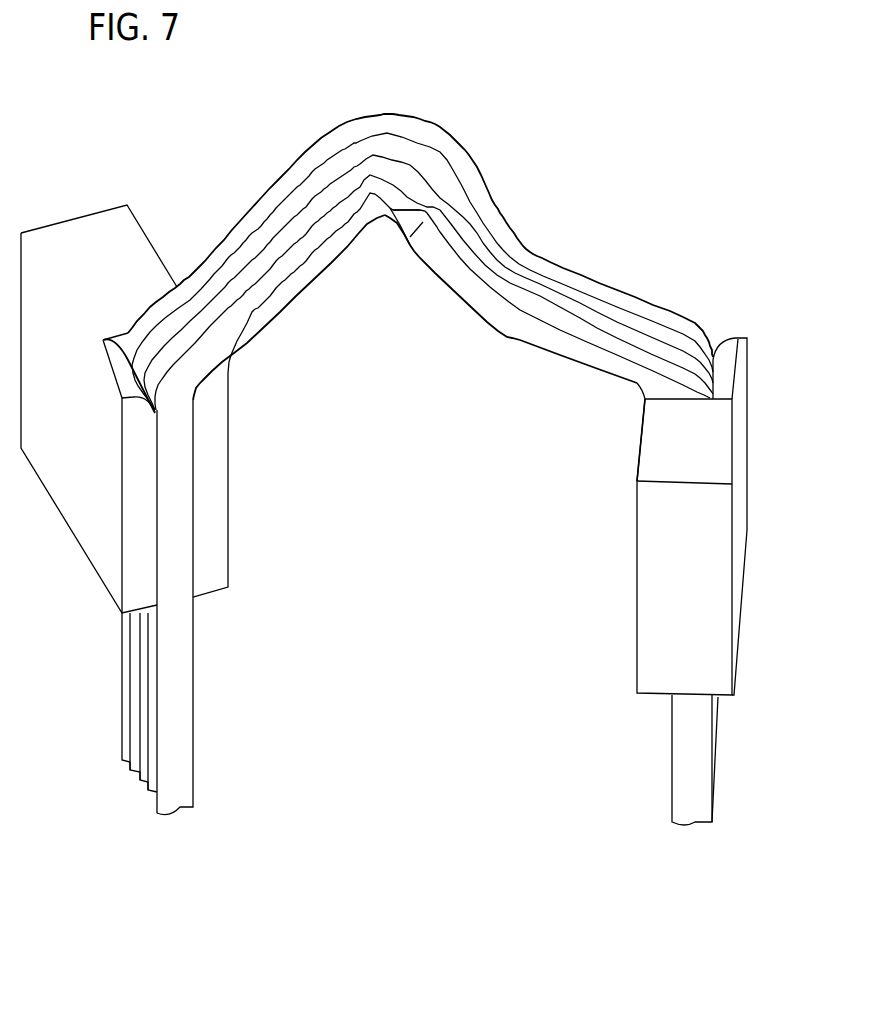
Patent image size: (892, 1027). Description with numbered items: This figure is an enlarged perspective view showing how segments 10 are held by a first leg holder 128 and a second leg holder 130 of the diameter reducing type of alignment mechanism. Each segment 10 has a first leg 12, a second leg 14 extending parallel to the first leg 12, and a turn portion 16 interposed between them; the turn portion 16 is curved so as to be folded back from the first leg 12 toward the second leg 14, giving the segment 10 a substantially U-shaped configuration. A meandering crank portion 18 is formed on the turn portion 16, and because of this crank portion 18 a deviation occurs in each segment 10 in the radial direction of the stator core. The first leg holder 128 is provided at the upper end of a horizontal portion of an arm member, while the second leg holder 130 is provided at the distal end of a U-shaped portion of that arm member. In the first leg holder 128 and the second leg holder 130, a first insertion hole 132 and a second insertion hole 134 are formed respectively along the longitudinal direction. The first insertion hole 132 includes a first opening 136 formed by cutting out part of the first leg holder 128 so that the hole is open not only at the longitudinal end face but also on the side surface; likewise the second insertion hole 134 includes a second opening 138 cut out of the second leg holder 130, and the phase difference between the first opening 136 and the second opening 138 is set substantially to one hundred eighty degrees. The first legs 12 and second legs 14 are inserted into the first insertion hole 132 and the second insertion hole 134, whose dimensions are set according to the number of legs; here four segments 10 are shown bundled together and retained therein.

The segment 10 is at (220, 270).
The first leg 12 is at (177, 790).
The second leg 14 is at (692, 810).
The turn portion 16 is at (318, 258).
The crank portion 18 is at (520, 335).
The first leg holder 128 is at (82, 518).
The second leg holder 130 is at (662, 627).
The first insertion hole 132 is at (118, 337).
The second insertion hole 134 is at (713, 378).
The first opening 136 is at (158, 462).
The second opening 138 is at (637, 443).